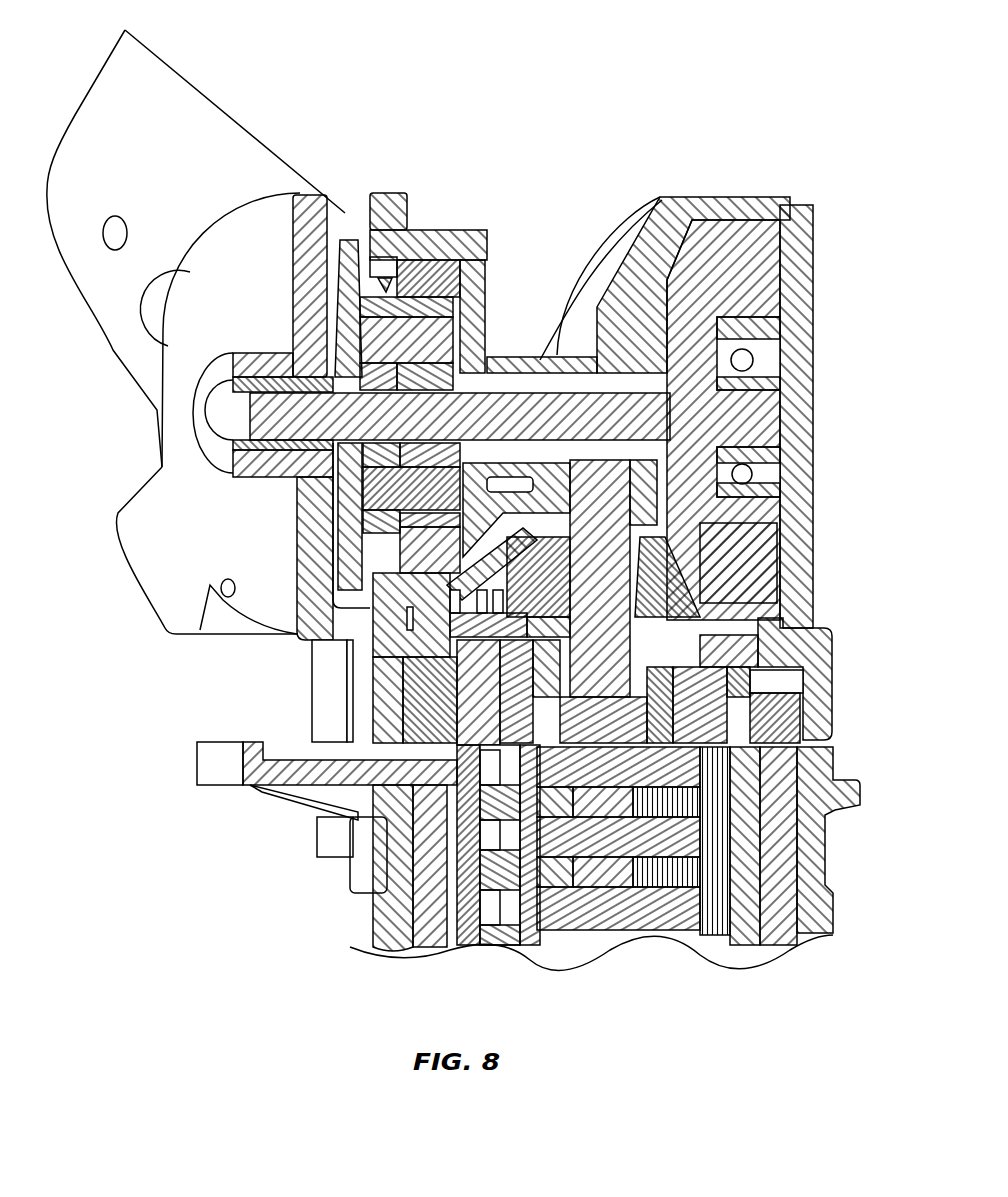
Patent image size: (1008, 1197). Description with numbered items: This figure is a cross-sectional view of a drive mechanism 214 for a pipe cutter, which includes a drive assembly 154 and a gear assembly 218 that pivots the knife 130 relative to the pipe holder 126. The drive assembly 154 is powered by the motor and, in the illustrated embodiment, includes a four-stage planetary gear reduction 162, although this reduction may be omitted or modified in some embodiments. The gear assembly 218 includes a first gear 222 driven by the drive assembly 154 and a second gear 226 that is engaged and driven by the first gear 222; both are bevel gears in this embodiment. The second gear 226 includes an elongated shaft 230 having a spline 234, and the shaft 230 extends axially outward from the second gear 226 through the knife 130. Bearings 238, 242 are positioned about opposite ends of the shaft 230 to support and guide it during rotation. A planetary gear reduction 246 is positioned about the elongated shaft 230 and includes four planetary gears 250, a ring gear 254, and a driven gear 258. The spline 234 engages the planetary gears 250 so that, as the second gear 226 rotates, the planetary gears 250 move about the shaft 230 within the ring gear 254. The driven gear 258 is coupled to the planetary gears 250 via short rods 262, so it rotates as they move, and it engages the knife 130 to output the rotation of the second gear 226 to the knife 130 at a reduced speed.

The knife 130 is at (175, 95).
The pipe holder 126 is at (158, 567).
The bearing 242 is at (243, 383).
The elongated shaft 230 is at (516, 412).
The short rods 262 is at (380, 330).
The driven gear 258 is at (384, 290).
The planetary gear reduction 246 is at (380, 228).
The ring gear 254 is at (420, 270).
The planetary gears 250 is at (440, 300).
The spline 234 is at (480, 295).
The second gear 226 is at (725, 255).
The bearing 238 is at (748, 368).
The first gear 222 is at (453, 590).
The gear assembly 218 is at (834, 594).
The drive mechanism 214 is at (158, 719).
The four-stage planetary gear reduction 162 is at (502, 842).
The drive assembly 154 is at (698, 955).